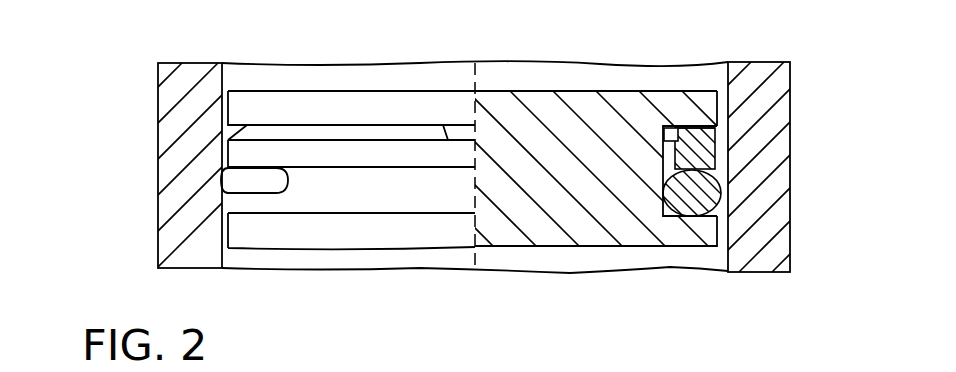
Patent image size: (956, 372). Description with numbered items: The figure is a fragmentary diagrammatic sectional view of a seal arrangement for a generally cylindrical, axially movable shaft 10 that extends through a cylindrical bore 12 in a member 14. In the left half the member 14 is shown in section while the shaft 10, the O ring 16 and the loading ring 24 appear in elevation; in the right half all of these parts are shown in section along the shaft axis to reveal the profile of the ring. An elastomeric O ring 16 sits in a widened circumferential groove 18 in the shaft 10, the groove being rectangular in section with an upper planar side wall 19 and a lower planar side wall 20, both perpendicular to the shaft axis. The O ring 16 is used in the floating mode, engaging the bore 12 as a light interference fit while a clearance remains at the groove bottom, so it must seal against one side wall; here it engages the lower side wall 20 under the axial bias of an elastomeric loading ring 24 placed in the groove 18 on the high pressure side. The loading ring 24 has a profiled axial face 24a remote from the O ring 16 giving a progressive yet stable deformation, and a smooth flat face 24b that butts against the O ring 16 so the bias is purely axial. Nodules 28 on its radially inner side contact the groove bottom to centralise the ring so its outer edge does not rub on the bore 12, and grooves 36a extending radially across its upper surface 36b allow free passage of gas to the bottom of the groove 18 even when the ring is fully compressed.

The shaft 10 is at (618, 212).
The bore 12 is at (728, 82).
The member 14 is at (183, 83).
The O ring 16 is at (382, 198).
The circumferential groove 18 is at (664, 130).
The upper side wall 19 is at (405, 127).
The lower side wall 20 is at (405, 216).
The elastomeric loading ring 24 is at (338, 152).
The axial face 24a is at (703, 128).
The smooth face 24b is at (232, 194).
The nodules 28 is at (662, 160).
The grooves 36a is at (457, 130).
The upper surface 36b is at (289, 124).